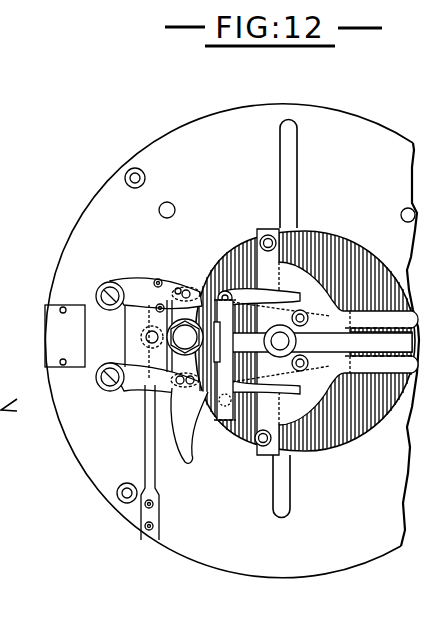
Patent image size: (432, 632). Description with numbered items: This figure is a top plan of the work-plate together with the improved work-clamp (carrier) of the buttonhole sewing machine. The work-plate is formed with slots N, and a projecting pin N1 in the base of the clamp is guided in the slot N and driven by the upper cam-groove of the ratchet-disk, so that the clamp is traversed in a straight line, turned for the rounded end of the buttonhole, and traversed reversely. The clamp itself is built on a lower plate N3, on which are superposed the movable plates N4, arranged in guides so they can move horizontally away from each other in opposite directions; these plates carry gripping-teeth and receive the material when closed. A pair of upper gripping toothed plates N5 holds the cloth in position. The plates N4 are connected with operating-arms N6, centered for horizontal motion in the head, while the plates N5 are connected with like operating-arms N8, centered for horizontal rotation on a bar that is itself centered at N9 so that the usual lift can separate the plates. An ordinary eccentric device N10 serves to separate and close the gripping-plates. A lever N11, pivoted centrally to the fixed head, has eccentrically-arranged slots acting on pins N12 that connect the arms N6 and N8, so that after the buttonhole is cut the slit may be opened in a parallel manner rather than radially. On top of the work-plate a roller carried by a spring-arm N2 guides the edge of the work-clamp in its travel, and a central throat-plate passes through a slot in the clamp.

The slots N is at (286, 187).
The projecting pin N1 is at (172, 337).
The spring-arm N2 is at (148, 462).
The lower plate N3 is at (305, 341).
The movable plates N4 is at (337, 342).
The upper gripping toothed plates N5 is at (309, 340).
The operating-arms N6 is at (300, 384).
The operating-arms N8 is at (254, 340).
The bar center N9 is at (274, 290).
The eccentric device N10 is at (194, 286).
The lever N11 is at (184, 458).
The pins N12 is at (180, 288).